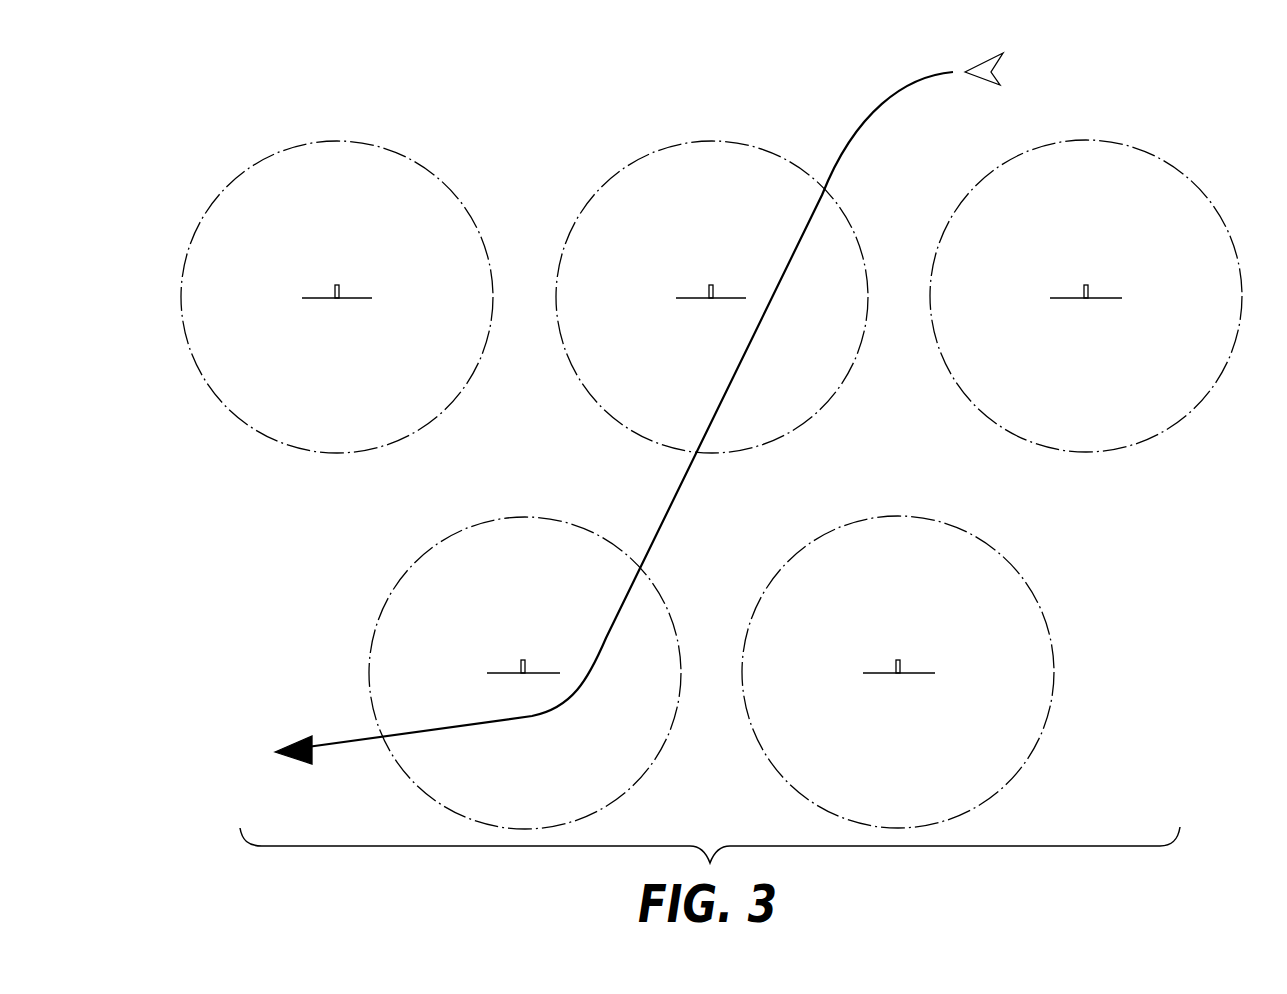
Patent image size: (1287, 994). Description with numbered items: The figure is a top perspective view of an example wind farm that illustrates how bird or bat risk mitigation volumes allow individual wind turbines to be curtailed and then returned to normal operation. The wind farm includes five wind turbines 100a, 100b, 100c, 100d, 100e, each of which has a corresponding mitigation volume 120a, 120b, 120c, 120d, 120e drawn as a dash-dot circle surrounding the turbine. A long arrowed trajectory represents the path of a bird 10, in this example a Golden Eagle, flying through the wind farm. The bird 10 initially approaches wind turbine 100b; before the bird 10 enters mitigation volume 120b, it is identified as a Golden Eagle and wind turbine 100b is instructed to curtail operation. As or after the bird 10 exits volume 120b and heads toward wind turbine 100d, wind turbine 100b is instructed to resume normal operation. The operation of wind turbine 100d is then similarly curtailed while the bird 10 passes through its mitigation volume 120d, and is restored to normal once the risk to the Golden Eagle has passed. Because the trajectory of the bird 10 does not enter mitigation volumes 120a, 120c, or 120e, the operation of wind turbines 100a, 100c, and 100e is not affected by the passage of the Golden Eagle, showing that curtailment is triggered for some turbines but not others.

The bird 10 is at (1010, 60).
The mitigation volume 120a is at (260, 160).
The mitigation volume 120b is at (636, 160).
The mitigation volume 120c is at (1010, 158).
The mitigation volume 120d is at (448, 534).
The mitigation volume 120e is at (820, 534).
The wind turbine 100a is at (320, 286).
The wind turbine 100b is at (694, 286).
The wind turbine 100c is at (1068, 286).
The wind turbine 100d is at (507, 661).
The wind turbine 100e is at (882, 661).